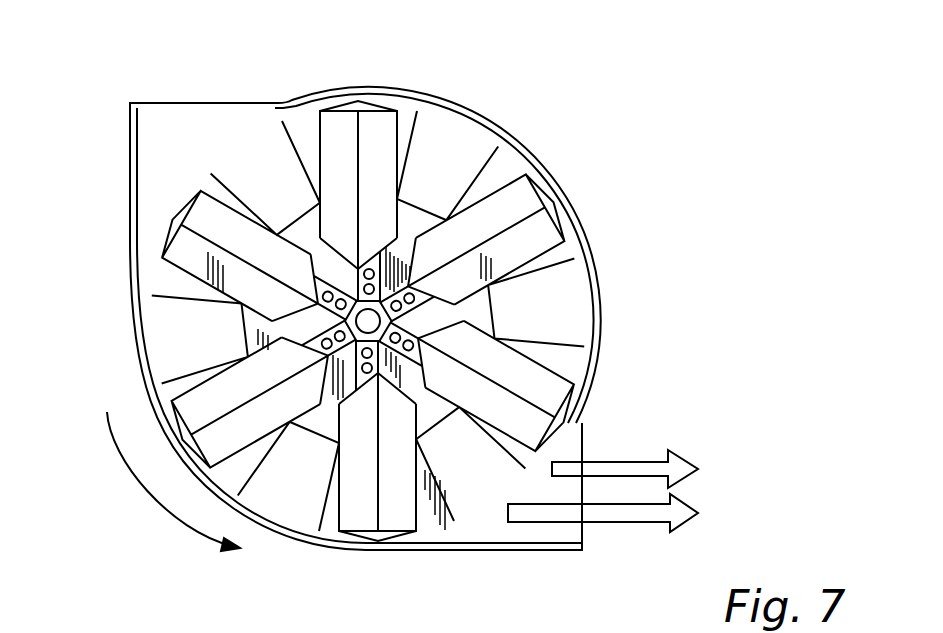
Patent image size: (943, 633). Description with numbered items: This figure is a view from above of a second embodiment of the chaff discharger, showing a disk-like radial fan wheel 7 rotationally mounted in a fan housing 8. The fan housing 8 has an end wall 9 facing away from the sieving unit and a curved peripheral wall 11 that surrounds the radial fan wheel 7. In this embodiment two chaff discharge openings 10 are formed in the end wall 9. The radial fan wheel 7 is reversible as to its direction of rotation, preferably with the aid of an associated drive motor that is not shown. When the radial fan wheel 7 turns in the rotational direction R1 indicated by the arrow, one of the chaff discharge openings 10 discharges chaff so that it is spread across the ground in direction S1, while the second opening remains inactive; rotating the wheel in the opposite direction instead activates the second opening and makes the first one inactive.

The radial fan wheel 7 is at (576, 197).
The fan housing 8 is at (287, 503).
The end wall 9 is at (478, 490).
The chaff discharge opening 10 is at (212, 121).
The curved peripheral wall 11 is at (128, 158).
The rotational direction R1 is at (150, 505).
The chaff spreading direction S1 is at (612, 512).